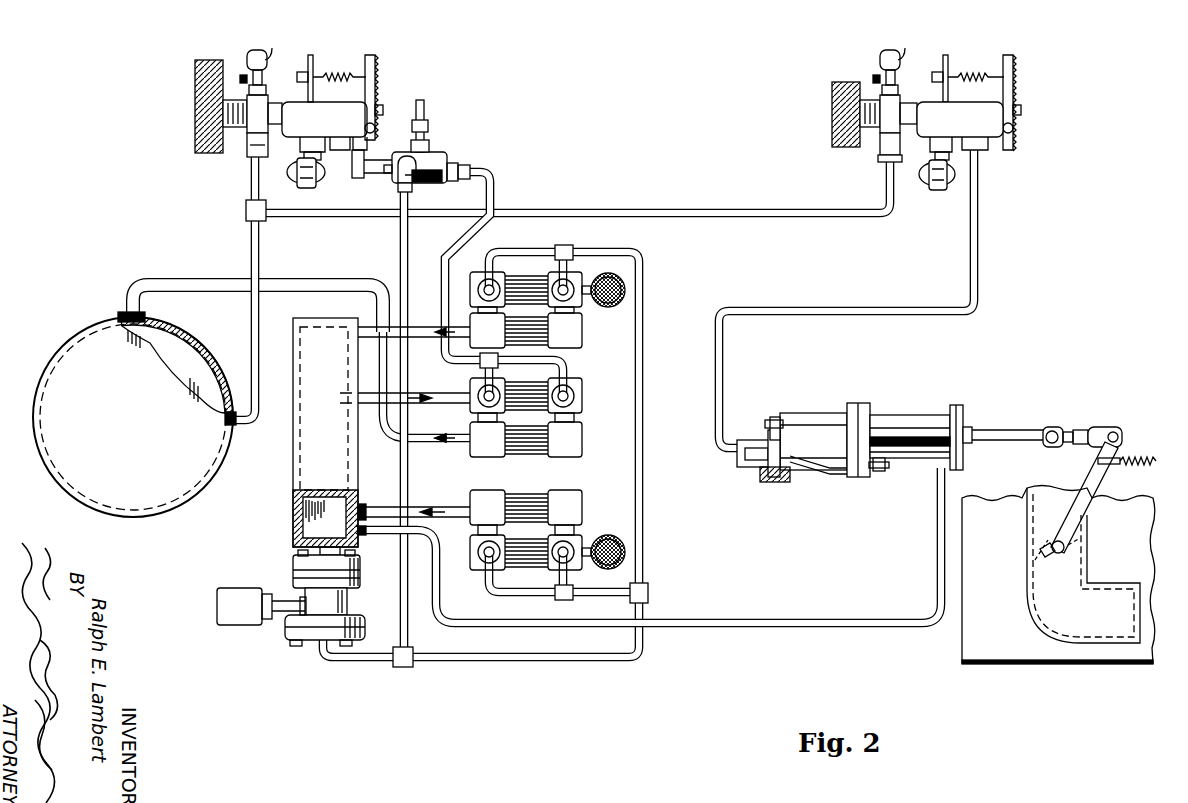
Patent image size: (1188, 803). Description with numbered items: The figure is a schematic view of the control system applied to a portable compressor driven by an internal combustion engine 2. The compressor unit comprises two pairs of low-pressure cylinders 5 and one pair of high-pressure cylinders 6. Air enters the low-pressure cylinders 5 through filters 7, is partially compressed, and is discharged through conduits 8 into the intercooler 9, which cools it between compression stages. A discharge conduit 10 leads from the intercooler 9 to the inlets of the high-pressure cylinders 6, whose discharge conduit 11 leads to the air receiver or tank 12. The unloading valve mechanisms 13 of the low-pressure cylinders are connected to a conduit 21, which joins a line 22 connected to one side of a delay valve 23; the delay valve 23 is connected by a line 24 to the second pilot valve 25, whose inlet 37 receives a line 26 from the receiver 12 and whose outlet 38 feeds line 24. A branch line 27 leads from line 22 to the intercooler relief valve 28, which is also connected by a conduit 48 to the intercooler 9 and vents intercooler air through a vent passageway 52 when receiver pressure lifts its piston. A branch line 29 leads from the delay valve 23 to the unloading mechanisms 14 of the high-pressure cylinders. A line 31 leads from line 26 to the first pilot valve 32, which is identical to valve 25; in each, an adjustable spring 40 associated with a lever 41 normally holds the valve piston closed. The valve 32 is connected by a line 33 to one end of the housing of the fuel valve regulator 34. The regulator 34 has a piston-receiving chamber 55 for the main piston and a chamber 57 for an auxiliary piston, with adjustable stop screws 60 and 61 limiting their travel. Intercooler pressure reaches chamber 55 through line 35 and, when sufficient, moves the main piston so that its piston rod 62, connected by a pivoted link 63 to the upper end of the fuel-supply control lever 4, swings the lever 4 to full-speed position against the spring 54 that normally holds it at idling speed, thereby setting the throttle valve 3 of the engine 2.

The driving engine 2 is at (961, 640).
The throttle valve 3 is at (1076, 545).
The fuel-supply control lever 4 is at (1099, 485).
The low-pressure cylinders 5 is at (575, 340).
The high-pressure cylinders 6 is at (572, 440).
The filters 7 is at (608, 308).
The conduits 8 is at (410, 327).
The intercooler 9 is at (306, 451).
The discharge conduit 10 is at (459, 392).
The discharge conduit 11 is at (291, 281).
The air receiver 12 is at (123, 506).
The unloading valve mechanism 13 is at (480, 292).
The valve unloading mechanisms 14 is at (575, 400).
The conduit 21 is at (546, 656).
The line 22 is at (405, 485).
The delay valve 23 is at (426, 159).
The line 24 is at (374, 176).
The pilot valve 25 is at (327, 111).
The line 26 is at (257, 352).
The branch line 27 is at (379, 661).
The intercooler relief valve 28 is at (351, 619).
The branch line 29 is at (485, 193).
The line 31 is at (604, 213).
The pilot valve 32 is at (962, 109).
The line 33 is at (976, 246).
The fuel valve regulator 34 is at (917, 411).
The line 35 is at (810, 618).
The inlet 37 is at (266, 126).
The outlet 38 is at (316, 161).
The adjustable spring 40 is at (331, 77).
The lever 41 is at (376, 106).
The conduit 48 is at (330, 541).
The vent passageway 52 is at (303, 603).
The spring 54 is at (1133, 463).
The piston-receiving chamber 55 is at (893, 450).
The piston-receiving chamber 57 is at (750, 446).
The adjustable stop screw 60 is at (880, 472).
The adjustable stop screw 61 is at (778, 418).
The piston rod 62 is at (1017, 437).
The pivoted link 63 is at (1070, 433).